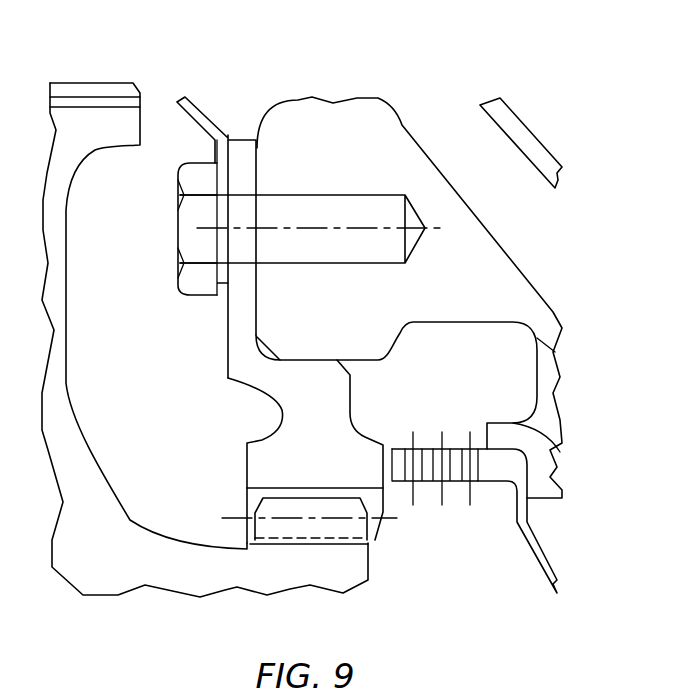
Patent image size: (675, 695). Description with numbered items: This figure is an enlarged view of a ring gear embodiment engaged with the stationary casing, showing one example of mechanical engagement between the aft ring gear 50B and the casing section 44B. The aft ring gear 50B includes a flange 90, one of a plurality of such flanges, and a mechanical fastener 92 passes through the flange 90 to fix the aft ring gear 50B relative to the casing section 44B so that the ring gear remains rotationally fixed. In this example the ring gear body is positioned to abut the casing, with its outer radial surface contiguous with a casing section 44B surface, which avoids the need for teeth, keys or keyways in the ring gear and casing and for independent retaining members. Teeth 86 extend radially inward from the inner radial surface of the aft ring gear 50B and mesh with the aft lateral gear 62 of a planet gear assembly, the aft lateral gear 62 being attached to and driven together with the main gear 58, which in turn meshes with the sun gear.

The main gear 58 is at (90, 90).
The flange 90 is at (240, 312).
The mechanical fastener 92 is at (329, 210).
The casing section 44B is at (490, 268).
The aft ring gear 50B is at (265, 453).
The aft lateral gear 62 is at (313, 525).
The teeth 86 is at (377, 510).